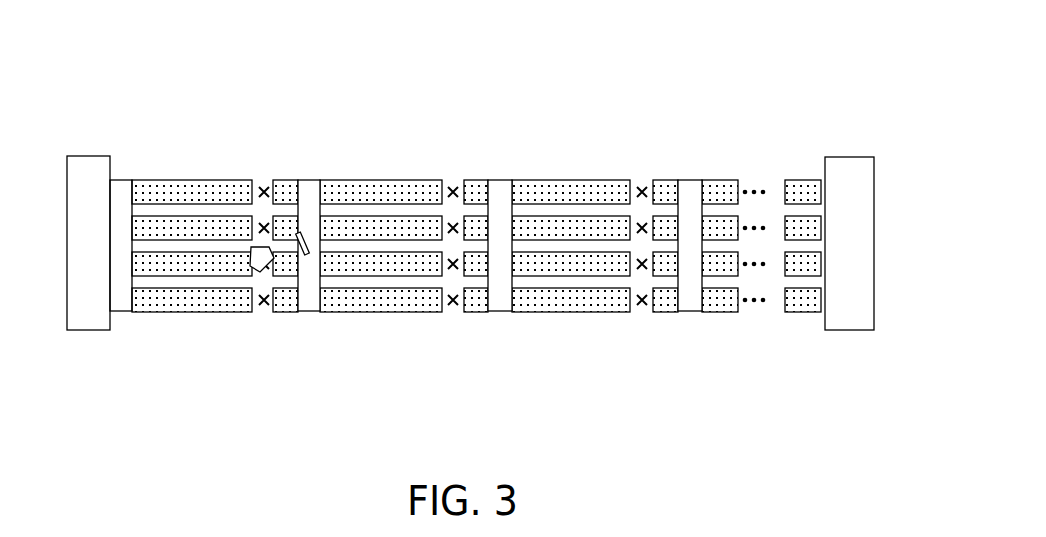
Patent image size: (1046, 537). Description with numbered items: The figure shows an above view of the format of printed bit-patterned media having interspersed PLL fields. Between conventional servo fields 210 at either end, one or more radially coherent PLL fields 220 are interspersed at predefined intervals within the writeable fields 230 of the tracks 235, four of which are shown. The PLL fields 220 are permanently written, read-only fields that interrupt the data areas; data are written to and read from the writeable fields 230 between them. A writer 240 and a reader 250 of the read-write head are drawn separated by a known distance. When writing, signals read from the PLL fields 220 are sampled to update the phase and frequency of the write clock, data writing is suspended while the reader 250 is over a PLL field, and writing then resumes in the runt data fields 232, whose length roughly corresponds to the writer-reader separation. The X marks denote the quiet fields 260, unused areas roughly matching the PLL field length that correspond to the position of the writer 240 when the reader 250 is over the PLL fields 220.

The servo fields 210 is at (88, 292).
The radially coherent PLL fields 220 is at (497, 177).
The writeable fields 230 is at (155, 185).
The runt data fields 232 is at (280, 184).
The tracks 235 is at (593, 187).
The writer 240 is at (252, 268).
The reader 250 is at (308, 258).
The quiet fields 260 is at (437, 363).